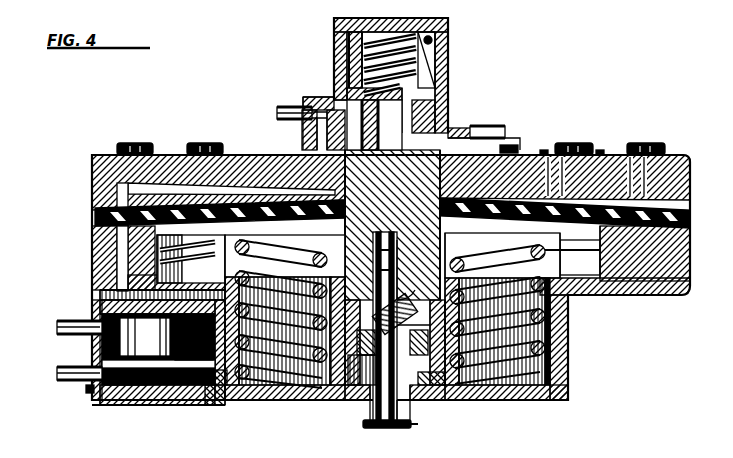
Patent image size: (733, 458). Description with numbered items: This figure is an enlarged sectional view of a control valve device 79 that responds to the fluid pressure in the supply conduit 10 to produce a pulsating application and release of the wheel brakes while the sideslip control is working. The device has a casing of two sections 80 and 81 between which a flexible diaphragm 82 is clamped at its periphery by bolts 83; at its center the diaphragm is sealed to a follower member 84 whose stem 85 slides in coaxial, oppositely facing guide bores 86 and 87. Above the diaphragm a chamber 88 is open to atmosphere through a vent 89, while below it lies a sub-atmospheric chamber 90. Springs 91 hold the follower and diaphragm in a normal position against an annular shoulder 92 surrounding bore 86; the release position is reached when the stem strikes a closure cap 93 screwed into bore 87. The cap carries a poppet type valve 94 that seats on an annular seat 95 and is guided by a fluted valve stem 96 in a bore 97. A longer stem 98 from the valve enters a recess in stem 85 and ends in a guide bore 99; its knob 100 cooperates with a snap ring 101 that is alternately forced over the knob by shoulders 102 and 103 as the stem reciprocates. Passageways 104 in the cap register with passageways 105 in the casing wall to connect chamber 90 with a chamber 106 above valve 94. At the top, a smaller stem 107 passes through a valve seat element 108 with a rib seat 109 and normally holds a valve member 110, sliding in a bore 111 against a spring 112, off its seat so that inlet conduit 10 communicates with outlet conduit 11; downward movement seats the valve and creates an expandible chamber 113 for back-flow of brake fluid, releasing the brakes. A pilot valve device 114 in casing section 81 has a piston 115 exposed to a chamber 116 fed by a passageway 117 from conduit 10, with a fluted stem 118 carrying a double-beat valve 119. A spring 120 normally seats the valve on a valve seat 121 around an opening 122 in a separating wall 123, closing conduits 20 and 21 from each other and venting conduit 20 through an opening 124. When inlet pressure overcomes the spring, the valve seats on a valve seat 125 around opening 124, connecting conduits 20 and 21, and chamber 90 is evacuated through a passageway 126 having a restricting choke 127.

The supply conduit 10 is at (298, 107).
The outlet conduit 11 is at (492, 126).
The conduit 20 is at (60, 375).
The conduit 21 is at (60, 327).
The control valve device 79 is at (692, 203).
The casing section 80 is at (672, 183).
The casing section 81 is at (670, 268).
The flexible diaphragm 82 is at (670, 230).
The bolts 83 is at (130, 143).
The follower member 84 is at (665, 250).
The stem 85 is at (494, 140).
The guide bore 86 is at (508, 146).
The guide bore 87 is at (432, 242).
The chamber 88 is at (600, 150).
The vent 89 is at (545, 150).
The sub-atmospheric chamber 90 is at (378, 259).
The springs 91 is at (520, 392).
The annular shoulder 92 is at (302, 152).
The closure cap 93 is at (425, 402).
The poppet type valve 94 is at (413, 424).
The annular seat 95 is at (368, 398).
The fluted valve stem 96 is at (385, 428).
The bore 97 is at (400, 422).
The stem 98 is at (432, 392).
The guide bore 99 is at (386, 238).
The knob 100 is at (428, 244).
The snap ring 101 is at (402, 300).
The shoulder 102 is at (383, 250).
The shoulder 103 is at (382, 270).
The passageways 104 is at (348, 345).
The passageways 105 is at (326, 388).
The chamber 106 is at (272, 388).
The stem 107 is at (334, 88).
The valve seat element 108 is at (437, 102).
The annular rib seat 109 is at (425, 80).
The valve member 110 is at (437, 52).
The bore 111 is at (349, 47).
The spring 112 is at (440, 28).
The expandible chamber 113 is at (440, 118).
The pilot valve device 114 is at (95, 350).
The piston 115 is at (128, 288).
The chamber 116 is at (150, 275).
The passageway 117 is at (125, 188).
The fluted stem 118 is at (120, 322).
The double-beat valve 119 is at (150, 386).
The spring 120 is at (100, 296).
The valve seat 121 is at (98, 385).
The opening 122 is at (88, 392).
The separating wall 123 is at (118, 362).
The opening 124 is at (182, 386).
The valve seat 125 is at (127, 386).
The passageway 126 is at (215, 392).
The restricting choke 127 is at (222, 387).